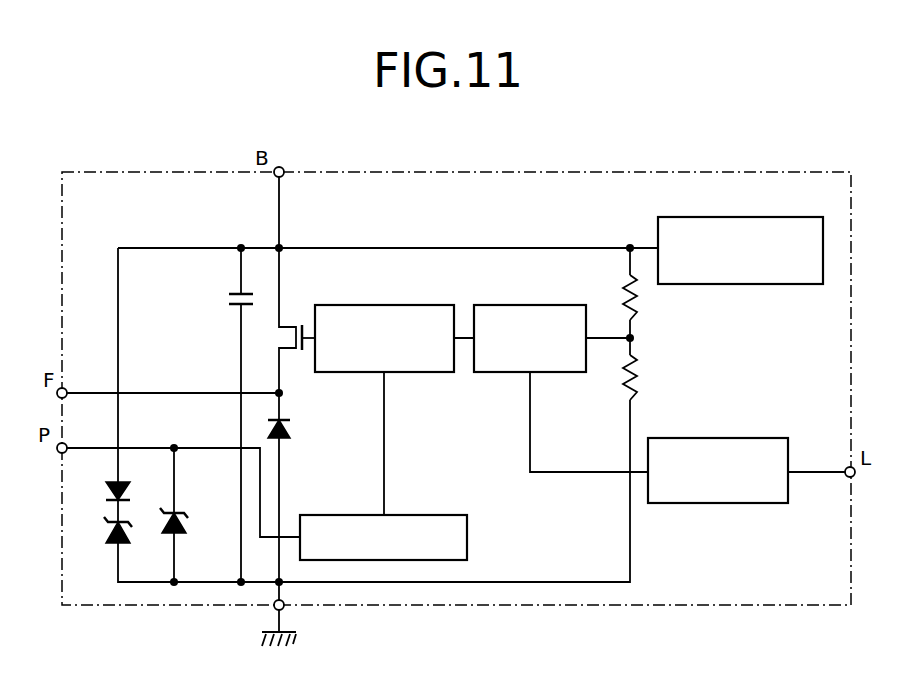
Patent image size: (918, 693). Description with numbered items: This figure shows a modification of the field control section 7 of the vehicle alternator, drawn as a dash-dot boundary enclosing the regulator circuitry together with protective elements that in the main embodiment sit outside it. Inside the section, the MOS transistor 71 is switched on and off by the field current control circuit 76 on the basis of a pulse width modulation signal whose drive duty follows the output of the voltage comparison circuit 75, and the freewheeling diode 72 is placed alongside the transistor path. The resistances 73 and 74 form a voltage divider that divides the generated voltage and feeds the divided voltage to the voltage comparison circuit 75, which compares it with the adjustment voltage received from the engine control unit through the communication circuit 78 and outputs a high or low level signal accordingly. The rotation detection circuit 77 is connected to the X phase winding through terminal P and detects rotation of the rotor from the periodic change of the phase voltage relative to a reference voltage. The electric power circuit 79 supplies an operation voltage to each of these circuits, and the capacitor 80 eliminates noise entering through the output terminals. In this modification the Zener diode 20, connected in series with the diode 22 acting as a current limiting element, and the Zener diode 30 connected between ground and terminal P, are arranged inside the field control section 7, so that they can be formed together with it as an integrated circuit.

The field control section 7 is at (810, 172).
The Zener diode 20 is at (115, 545).
The diode 22 is at (106, 490).
The Zener diode 30 is at (178, 535).
The MOS transistor 71 is at (290, 352).
The freewheeling diode 72 is at (290, 434).
The resistance 73 is at (640, 365).
The resistance 74 is at (640, 304).
The voltage comparison circuit 75 is at (518, 305).
The field current control circuit 76 is at (378, 305).
The rotation detection circuit 77 is at (422, 515).
The communication circuit 78 is at (735, 503).
The electric power circuit 79 is at (785, 284).
The capacitor 80 is at (236, 294).